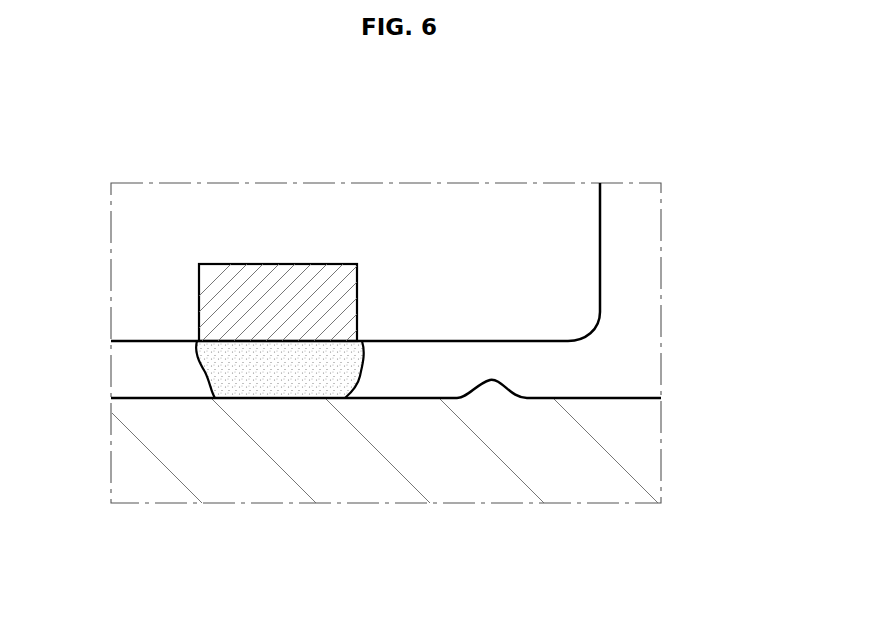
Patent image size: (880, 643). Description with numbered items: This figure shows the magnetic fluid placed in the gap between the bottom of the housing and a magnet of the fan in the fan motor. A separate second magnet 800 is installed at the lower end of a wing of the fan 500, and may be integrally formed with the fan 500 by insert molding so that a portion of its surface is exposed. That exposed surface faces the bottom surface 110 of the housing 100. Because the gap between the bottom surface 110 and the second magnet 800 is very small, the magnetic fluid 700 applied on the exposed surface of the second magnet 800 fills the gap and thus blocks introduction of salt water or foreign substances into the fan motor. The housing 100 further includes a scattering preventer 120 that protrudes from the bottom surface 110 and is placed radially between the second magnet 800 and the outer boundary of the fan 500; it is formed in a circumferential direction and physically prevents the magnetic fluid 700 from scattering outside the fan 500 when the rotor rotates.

The housing 100 is at (232, 485).
The bottom surface 110 is at (632, 398).
The scattering preventer 120 is at (497, 383).
The fan 500 is at (428, 205).
The magnetic fluid 700 is at (213, 367).
The second magnet 800 is at (209, 297).